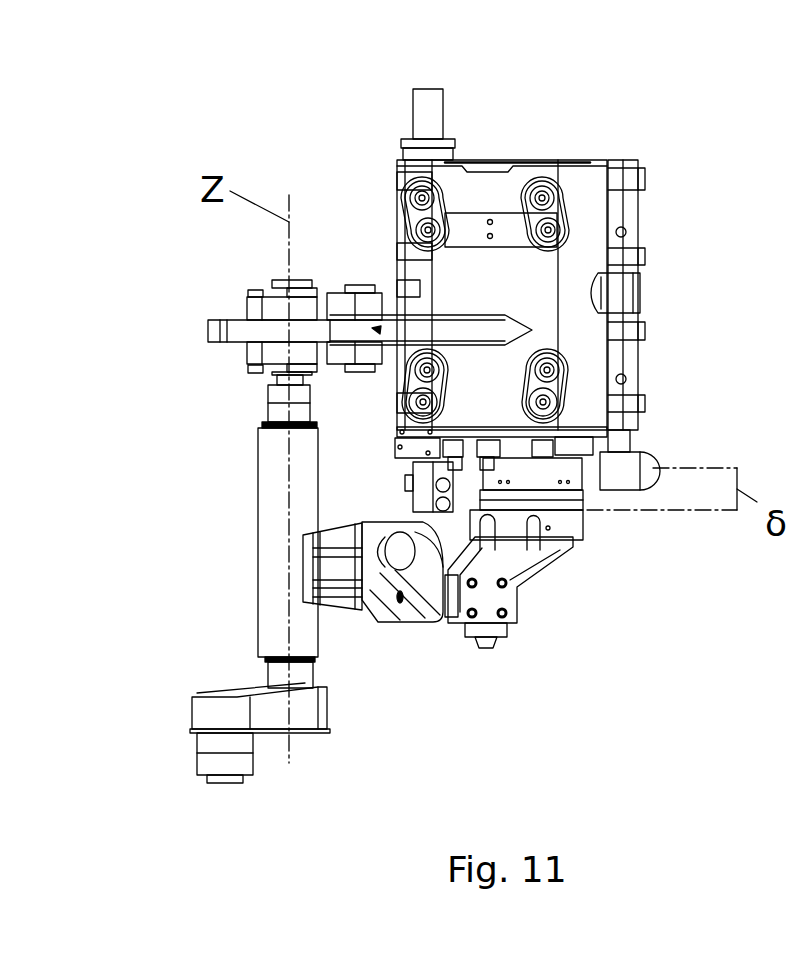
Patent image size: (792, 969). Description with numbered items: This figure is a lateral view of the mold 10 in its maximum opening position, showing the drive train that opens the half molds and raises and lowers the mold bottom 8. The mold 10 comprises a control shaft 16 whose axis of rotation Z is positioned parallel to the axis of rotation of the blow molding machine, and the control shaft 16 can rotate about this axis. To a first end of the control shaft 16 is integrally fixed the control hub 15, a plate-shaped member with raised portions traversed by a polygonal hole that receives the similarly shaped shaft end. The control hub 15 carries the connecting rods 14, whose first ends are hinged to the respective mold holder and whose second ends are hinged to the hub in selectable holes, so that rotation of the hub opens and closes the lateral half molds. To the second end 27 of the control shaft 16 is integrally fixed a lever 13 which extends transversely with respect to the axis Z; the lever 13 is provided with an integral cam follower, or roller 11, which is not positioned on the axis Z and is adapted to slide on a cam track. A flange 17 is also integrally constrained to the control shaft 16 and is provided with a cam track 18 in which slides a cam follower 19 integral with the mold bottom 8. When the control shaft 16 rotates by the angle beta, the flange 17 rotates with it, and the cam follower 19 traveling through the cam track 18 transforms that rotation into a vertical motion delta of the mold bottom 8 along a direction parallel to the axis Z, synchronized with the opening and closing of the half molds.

The mold bottom 8 is at (537, 477).
The mold 10 is at (256, 128).
The roller 11 is at (232, 765).
The lever 13 is at (298, 707).
The first pair of connecting rods 14 is at (313, 313).
The control hub 15 is at (260, 332).
The control shaft 16 is at (278, 535).
The flange 17 is at (370, 567).
The cam track 18 is at (404, 565).
The cam follower 19 is at (443, 615).
The second end of the control shaft 27 is at (282, 675).